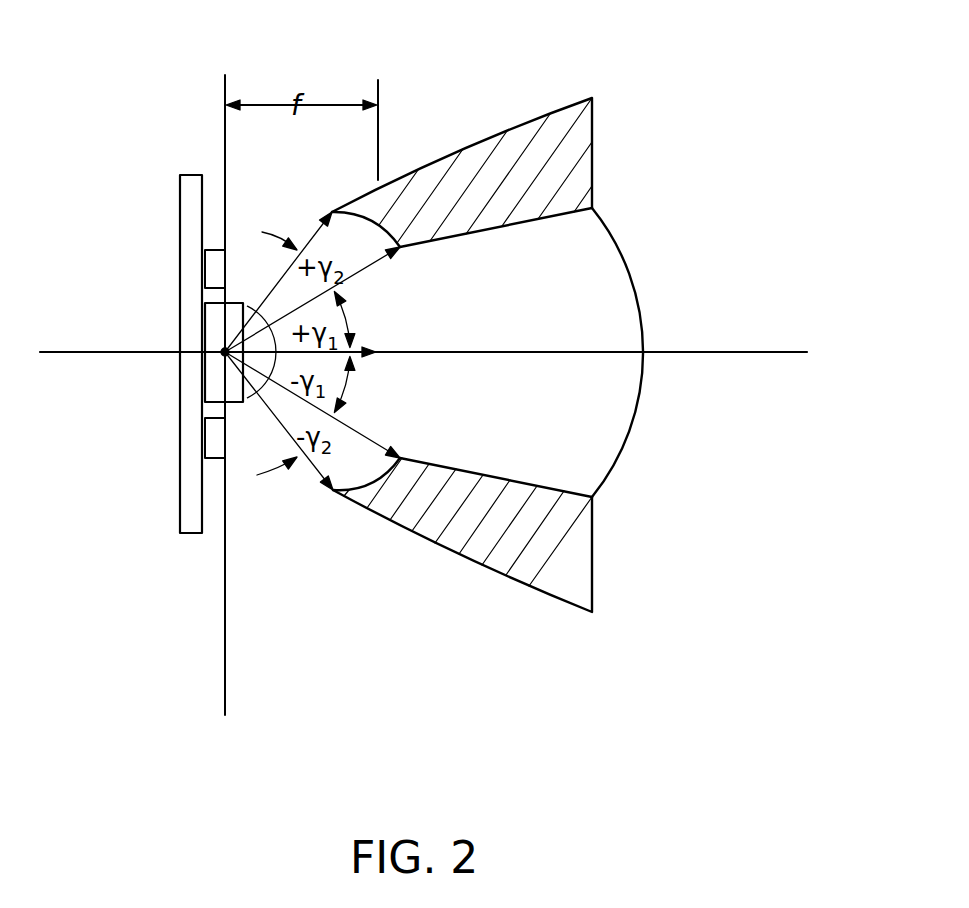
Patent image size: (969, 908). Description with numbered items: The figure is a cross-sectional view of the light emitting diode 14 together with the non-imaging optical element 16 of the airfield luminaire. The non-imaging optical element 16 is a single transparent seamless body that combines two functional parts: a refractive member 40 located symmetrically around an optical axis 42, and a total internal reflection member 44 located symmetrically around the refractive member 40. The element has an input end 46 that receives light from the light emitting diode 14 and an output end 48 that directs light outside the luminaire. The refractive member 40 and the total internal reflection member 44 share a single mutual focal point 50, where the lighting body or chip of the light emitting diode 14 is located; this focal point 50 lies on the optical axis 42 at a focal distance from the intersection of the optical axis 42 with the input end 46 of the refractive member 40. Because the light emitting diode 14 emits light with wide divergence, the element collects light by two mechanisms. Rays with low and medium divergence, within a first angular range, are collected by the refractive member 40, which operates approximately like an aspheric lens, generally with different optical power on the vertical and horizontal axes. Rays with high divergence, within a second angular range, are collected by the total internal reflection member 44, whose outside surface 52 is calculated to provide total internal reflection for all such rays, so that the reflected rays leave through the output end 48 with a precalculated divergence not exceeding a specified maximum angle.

The light emitting diode 14 is at (205, 385).
The non-imaging optical element 16 is at (513, 364).
The refractive member 40 is at (588, 283).
The optical axis 42 is at (708, 352).
The total internal reflection member 44 is at (562, 117).
The input end 46 is at (318, 225).
The output end 48 is at (638, 295).
The focal point 50 is at (225, 352).
The outside surface 52 is at (455, 147).